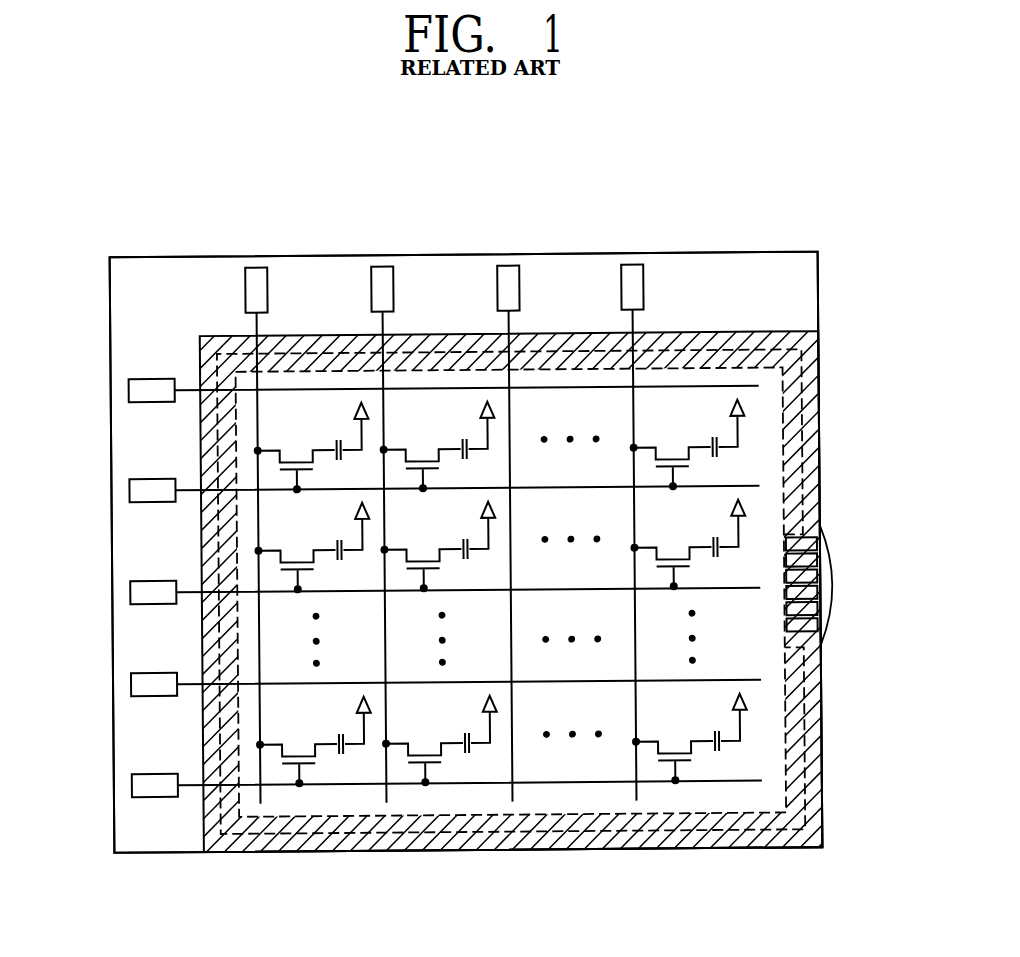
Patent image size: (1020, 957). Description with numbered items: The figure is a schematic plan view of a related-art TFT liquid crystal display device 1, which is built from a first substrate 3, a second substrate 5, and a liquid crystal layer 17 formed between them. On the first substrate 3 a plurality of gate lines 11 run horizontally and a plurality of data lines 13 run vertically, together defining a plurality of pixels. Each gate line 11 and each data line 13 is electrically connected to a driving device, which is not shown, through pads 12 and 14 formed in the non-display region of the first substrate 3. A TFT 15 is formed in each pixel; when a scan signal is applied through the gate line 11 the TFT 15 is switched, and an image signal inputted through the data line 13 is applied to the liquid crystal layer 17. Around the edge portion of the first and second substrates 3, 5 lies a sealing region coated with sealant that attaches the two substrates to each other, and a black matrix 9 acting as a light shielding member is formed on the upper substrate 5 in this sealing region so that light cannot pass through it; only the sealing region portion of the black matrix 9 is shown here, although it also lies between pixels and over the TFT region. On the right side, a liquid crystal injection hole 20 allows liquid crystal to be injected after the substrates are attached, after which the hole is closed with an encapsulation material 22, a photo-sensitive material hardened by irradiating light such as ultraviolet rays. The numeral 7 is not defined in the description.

The TFT liquid crystal display device 1 is at (478, 252).
The first substrate 3 is at (813, 292).
The second substrate 5 is at (805, 389).
The inner seal boundary 7 is at (790, 725).
The black matrix 9 is at (805, 440).
The gate line 11 is at (337, 783).
The pad 12 is at (130, 489).
The data line 13 is at (257, 422).
The pad 14 is at (258, 266).
The TFT 15 is at (253, 563).
The liquid crystal layer 17 is at (362, 401).
The liquid crystal injection hole 20 is at (841, 538).
The encapsulation material 22 is at (832, 586).